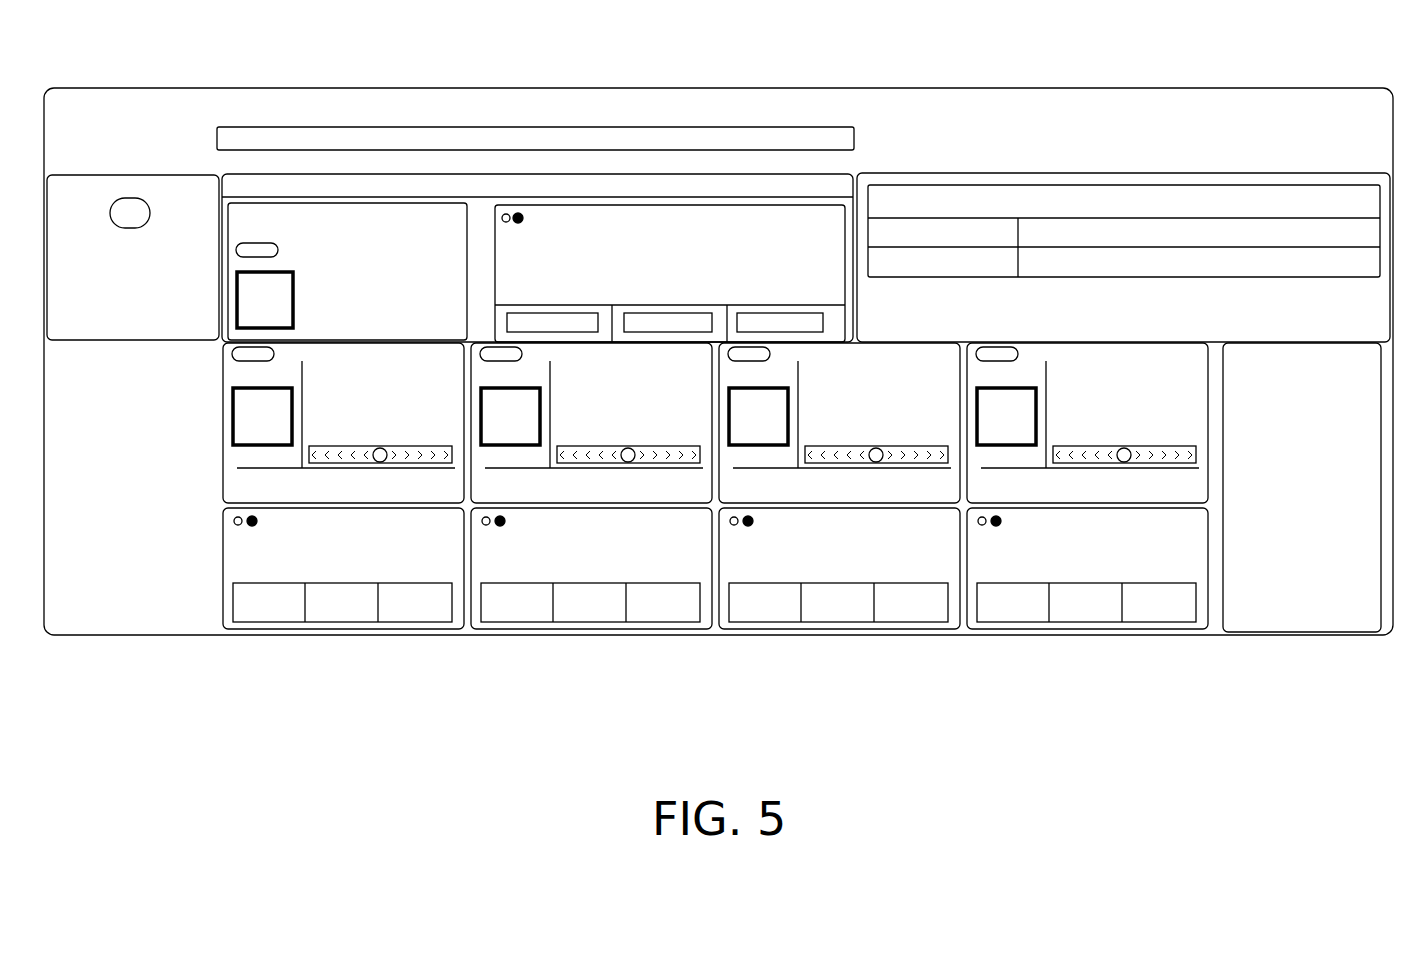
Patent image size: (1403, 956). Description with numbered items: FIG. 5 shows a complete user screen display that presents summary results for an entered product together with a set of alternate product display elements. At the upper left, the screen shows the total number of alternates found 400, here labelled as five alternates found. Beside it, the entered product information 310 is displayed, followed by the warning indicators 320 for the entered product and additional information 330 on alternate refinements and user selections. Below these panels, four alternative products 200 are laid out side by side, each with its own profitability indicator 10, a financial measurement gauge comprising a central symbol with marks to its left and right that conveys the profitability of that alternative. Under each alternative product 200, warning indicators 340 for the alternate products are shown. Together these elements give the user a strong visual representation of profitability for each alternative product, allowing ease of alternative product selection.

The profitability indicator 10 is at (381, 462).
The alternative product 200 is at (304, 490).
The entered product information 310 is at (353, 222).
The warning indicators for the entered product 320 is at (665, 220).
The additional information 330 is at (1032, 197).
The warning indicators for the alternate products 340 is at (292, 570).
The total number of alternates found 400 is at (158, 193).